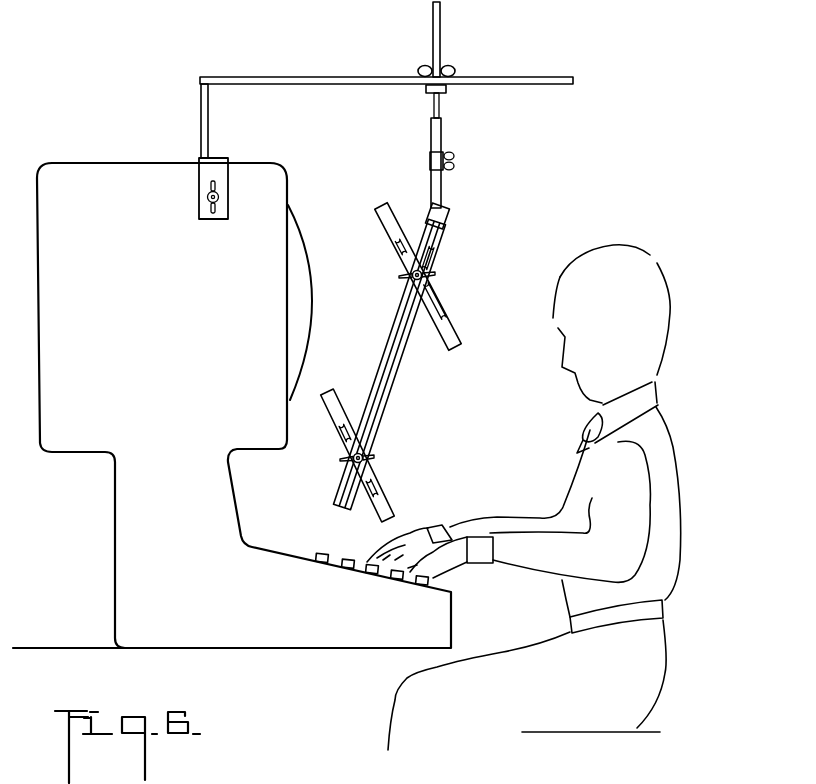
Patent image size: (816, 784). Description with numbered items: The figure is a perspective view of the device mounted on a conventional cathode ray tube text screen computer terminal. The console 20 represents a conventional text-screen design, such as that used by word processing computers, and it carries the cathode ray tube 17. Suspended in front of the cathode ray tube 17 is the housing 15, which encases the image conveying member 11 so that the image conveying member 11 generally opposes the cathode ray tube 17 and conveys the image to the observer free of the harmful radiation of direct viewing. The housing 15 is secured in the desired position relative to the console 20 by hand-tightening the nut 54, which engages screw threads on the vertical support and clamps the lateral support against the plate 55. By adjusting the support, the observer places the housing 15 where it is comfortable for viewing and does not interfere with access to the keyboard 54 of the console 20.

The nut 54 is at (450, 66).
The plate 55 is at (446, 92).
The cathode ray tube 17 is at (301, 251).
The image conveying member 11 is at (460, 336).
The housing 15 is at (401, 383).
The console 20 is at (125, 553).